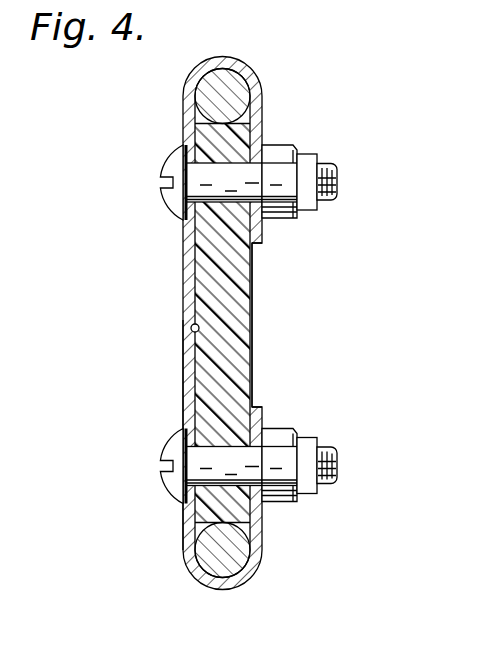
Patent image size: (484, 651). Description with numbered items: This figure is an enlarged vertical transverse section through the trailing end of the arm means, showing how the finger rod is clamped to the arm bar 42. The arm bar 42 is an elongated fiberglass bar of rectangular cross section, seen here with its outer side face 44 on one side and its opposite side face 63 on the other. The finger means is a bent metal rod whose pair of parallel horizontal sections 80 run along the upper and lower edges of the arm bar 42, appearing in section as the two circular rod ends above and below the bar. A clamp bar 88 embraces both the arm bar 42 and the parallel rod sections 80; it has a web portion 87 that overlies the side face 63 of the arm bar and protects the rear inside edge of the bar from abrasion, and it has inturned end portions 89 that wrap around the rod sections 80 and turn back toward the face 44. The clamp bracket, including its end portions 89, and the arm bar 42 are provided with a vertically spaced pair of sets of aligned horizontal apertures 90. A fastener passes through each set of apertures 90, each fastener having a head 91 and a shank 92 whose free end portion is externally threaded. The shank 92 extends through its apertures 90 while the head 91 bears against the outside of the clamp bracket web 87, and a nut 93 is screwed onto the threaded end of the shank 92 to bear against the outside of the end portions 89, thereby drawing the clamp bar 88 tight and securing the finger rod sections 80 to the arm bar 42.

The arm bar 42 is at (242, 321).
The outer side face 44 is at (253, 357).
The side face 63 is at (191, 328).
The parallel horizontal sections 80 is at (238, 94).
The web portion 87 is at (186, 383).
The clamp bar 88 is at (186, 287).
The inturned end portions 89 is at (254, 244).
The alined horizontal apertures 90 is at (201, 167).
The head 91 is at (171, 158).
The shank 92 is at (334, 178).
The nut 93 is at (284, 146).